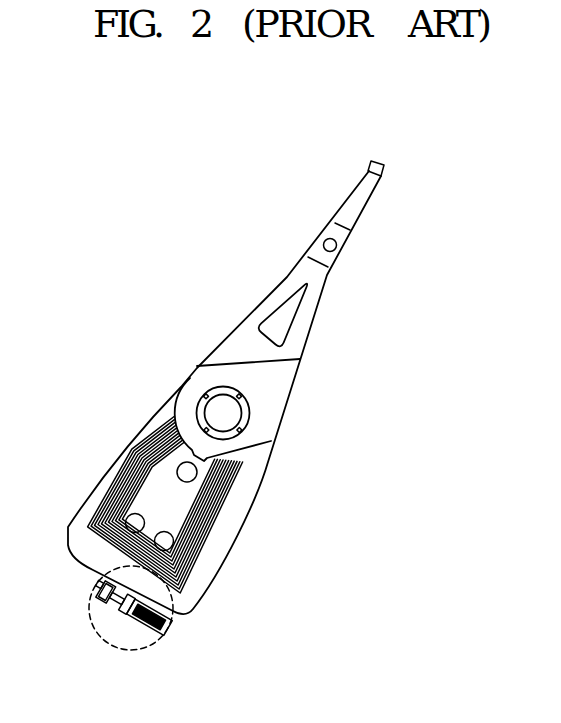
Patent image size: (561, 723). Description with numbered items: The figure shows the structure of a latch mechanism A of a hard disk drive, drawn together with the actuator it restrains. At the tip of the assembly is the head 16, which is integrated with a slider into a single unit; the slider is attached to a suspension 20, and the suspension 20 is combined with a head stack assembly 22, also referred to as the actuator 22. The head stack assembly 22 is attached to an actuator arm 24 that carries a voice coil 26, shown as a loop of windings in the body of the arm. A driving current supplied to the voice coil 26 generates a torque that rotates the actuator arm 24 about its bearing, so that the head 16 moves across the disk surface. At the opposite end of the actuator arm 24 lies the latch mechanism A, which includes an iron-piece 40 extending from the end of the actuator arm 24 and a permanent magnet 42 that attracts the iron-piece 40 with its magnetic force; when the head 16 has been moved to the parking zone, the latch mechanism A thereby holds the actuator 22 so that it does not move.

The head 16 is at (372, 163).
The suspension 20 is at (345, 213).
The head stack assembly 22 is at (212, 388).
The actuator arm 24 is at (150, 422).
The voice coil 26 is at (110, 498).
The iron-piece 40 is at (100, 605).
The permanent magnet 42 is at (127, 616).
The latch mechanism A is at (153, 643).